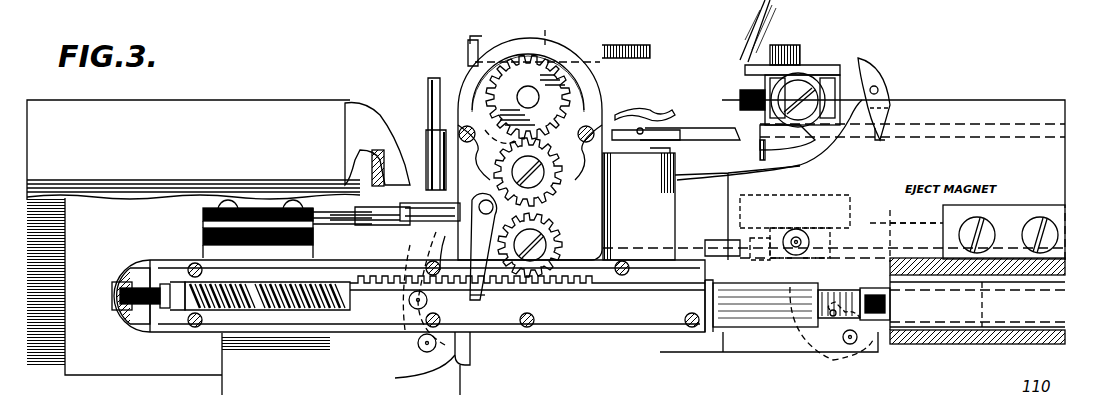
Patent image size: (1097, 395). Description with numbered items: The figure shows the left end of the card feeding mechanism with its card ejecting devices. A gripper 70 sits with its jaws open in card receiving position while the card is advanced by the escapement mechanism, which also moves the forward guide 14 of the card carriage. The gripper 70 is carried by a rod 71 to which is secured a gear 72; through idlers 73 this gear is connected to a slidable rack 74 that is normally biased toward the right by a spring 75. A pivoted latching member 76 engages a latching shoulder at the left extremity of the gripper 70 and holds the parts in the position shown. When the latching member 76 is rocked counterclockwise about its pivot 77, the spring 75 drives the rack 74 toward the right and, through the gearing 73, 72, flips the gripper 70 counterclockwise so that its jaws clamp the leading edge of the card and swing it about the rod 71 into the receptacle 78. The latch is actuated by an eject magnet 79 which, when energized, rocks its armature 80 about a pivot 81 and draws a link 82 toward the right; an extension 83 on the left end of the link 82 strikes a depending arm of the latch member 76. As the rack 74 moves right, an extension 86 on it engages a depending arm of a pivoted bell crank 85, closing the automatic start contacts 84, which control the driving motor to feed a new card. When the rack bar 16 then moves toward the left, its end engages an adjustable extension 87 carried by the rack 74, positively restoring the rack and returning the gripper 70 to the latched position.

The forward guide 14 is at (862, 85).
The rack bar 16 is at (985, 298).
The gripper 70 is at (615, 110).
The rod 71 is at (530, 95).
The gear 72 is at (556, 72).
The idlers 73 is at (552, 225).
The slidable rack 74 is at (560, 300).
The spring 75 is at (320, 310).
The pivoted latching member 76 is at (462, 98).
The pivot 77 is at (528, 172).
The receptacle 78 is at (193, 247).
The eject magnet 79 is at (890, 212).
The armature 80 is at (850, 232).
The pivot 81 is at (870, 348).
The link 82 is at (700, 240).
The extension 83 is at (440, 122).
The automatic start contacts 84 is at (355, 200).
The pivoted bell crank 85 is at (482, 300).
The extension 86 is at (348, 305).
The adjustable extension 87 is at (885, 296).